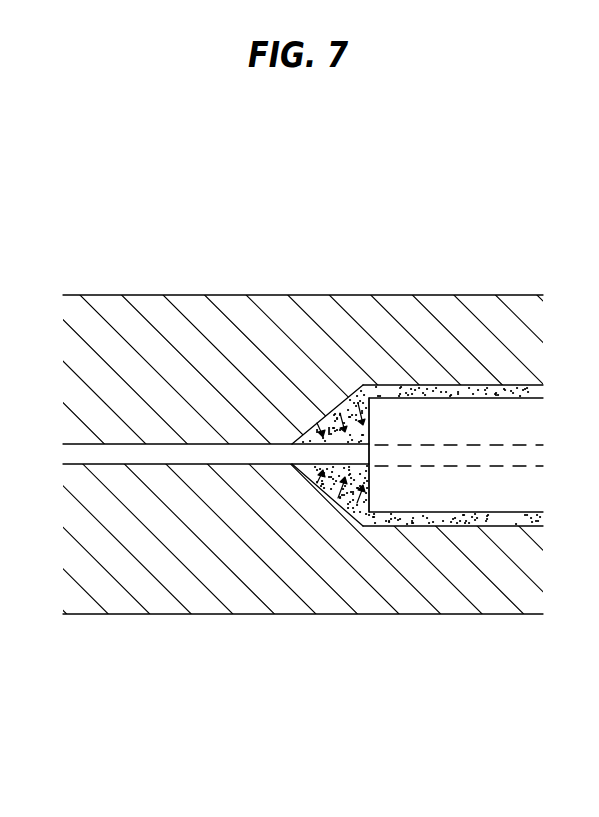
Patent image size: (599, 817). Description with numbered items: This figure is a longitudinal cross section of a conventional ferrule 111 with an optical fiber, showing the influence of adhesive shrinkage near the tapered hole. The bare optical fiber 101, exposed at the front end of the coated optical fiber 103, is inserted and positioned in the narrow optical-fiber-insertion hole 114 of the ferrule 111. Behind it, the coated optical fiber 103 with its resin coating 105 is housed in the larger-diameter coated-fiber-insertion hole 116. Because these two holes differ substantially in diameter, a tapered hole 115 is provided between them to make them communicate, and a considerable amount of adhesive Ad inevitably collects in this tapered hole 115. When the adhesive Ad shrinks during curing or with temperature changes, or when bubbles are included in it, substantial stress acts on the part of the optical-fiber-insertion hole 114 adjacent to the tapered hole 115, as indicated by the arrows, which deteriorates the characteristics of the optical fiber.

The bare optical fiber 101 is at (232, 453).
The coated optical fiber 103 is at (427, 427).
The resin coating 105 is at (441, 513).
The ferrule 111 is at (477, 294).
The optical-fiber-insertion hole 114 is at (112, 464).
The tapered hole 115 is at (348, 505).
The coated-fiber-insertion hole 116 is at (463, 527).
The adhesive Ad is at (333, 490).